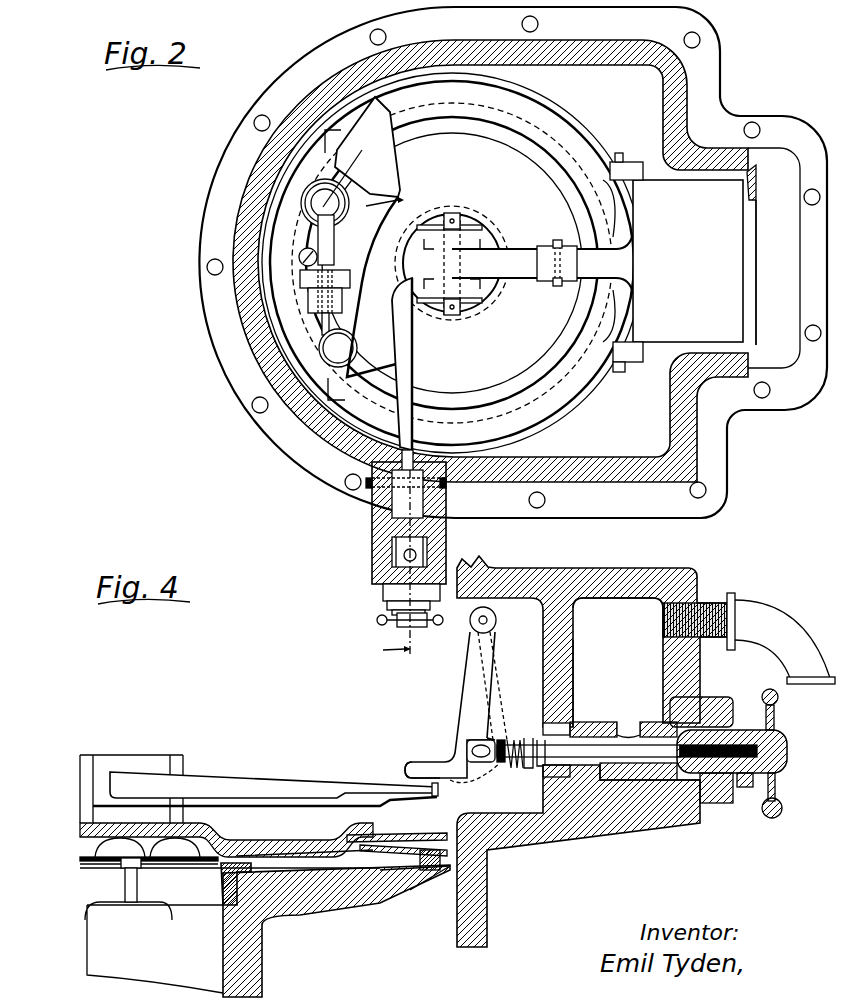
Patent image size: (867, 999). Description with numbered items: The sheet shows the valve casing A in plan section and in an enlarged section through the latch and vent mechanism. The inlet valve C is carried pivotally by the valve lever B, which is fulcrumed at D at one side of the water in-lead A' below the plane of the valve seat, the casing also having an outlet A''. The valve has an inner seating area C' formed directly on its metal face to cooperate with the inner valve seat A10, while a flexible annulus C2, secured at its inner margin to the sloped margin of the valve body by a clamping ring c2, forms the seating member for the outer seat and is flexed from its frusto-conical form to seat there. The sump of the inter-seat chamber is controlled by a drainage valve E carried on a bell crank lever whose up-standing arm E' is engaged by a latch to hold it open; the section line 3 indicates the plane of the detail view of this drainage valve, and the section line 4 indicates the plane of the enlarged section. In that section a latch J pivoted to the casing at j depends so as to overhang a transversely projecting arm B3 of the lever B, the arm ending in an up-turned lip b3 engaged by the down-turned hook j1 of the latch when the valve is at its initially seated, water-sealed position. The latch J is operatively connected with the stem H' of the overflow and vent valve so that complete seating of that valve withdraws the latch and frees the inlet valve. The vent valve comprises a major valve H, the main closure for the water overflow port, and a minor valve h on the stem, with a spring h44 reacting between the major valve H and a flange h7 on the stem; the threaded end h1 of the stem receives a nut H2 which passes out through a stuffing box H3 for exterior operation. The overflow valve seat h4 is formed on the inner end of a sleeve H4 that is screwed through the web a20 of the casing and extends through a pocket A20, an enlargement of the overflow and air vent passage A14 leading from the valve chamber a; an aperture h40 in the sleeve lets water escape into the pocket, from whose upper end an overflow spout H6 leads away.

In FIG. 2, the inlet valve C is at (452, 263).
In FIG. 2, the valve lever B is at (522, 258).
In FIG. 4, the valve lever B is at (133, 772).
In FIG. 2, the fulcrum D is at (611, 160).
In FIG. 2, the drainage valve E is at (349, 237).
In FIG. 2, the up-standing arm of bell crank lever E' is at (348, 200).
In FIG. 2, the valve casing A is at (376, 207).
In FIG. 4, the valve casing A is at (595, 641).
In FIG. 2, the transversely projecting arm B3 is at (413, 369).
In FIG. 4, the transversely projecting arm B3 is at (313, 790).
In FIG. 2, the latch J is at (380, 467).
In FIG. 4, the latch J is at (465, 690).
In FIG. 2, the latch pivot j is at (447, 497).
In FIG. 4, the latch pivot j is at (485, 610).
In FIG. 2, the down-turned hook j1 is at (418, 446).
In FIG. 4, the down-turned hook j1 is at (404, 773).
In FIG. 2, the sleeve H4 is at (420, 544).
In FIG. 4, the sleeve H4 is at (583, 722).
In FIG. 2, the aperture h40 is at (405, 553).
In FIG. 4, the aperture h40 is at (633, 722).
In FIG. 2, the nut H2 is at (393, 608).
In FIG. 4, the nut H2 is at (787, 742).
In FIG. 2, the section line 3 is at (343, 268).
In FIG. 2, the section line 4— 4 is at (388, 652).
In FIG. 4, the web a20 is at (618, 623).
In FIG. 4, the pocket A20 is at (640, 672).
In FIG. 4, the overflow and air vent passage A14 is at (677, 616).
In FIG. 4, the overflow spout H6 is at (773, 614).
In FIG. 4, the minor valve h is at (510, 736).
In FIG. 4, the major valve H is at (588, 731).
In FIG. 4, the flange h7 is at (500, 766).
In FIG. 4, the spring h44 is at (514, 767).
In FIG. 4, the overflow valve seat h4 is at (545, 771).
In FIG. 4, the stem H' is at (666, 776).
In FIG. 4, the stuffing box H3 is at (708, 806).
In FIG. 4, the threaded end h1 is at (697, 756).
In FIG. 4, the flexible annulus C2 is at (420, 847).
In FIG. 4, the clamping ring c2 is at (468, 789).
In FIG. 4, the up-turned lip b3 is at (432, 796).
In FIG. 4, the seating area C' is at (263, 845).
In FIG. 4, the valve chamber a is at (154, 925).
In FIG. 4, the inner valve seat A10 is at (222, 872).
In FIG. 4, the water in-lead A' is at (336, 923).
In FIG. 4, the outlet A'' is at (415, 901).